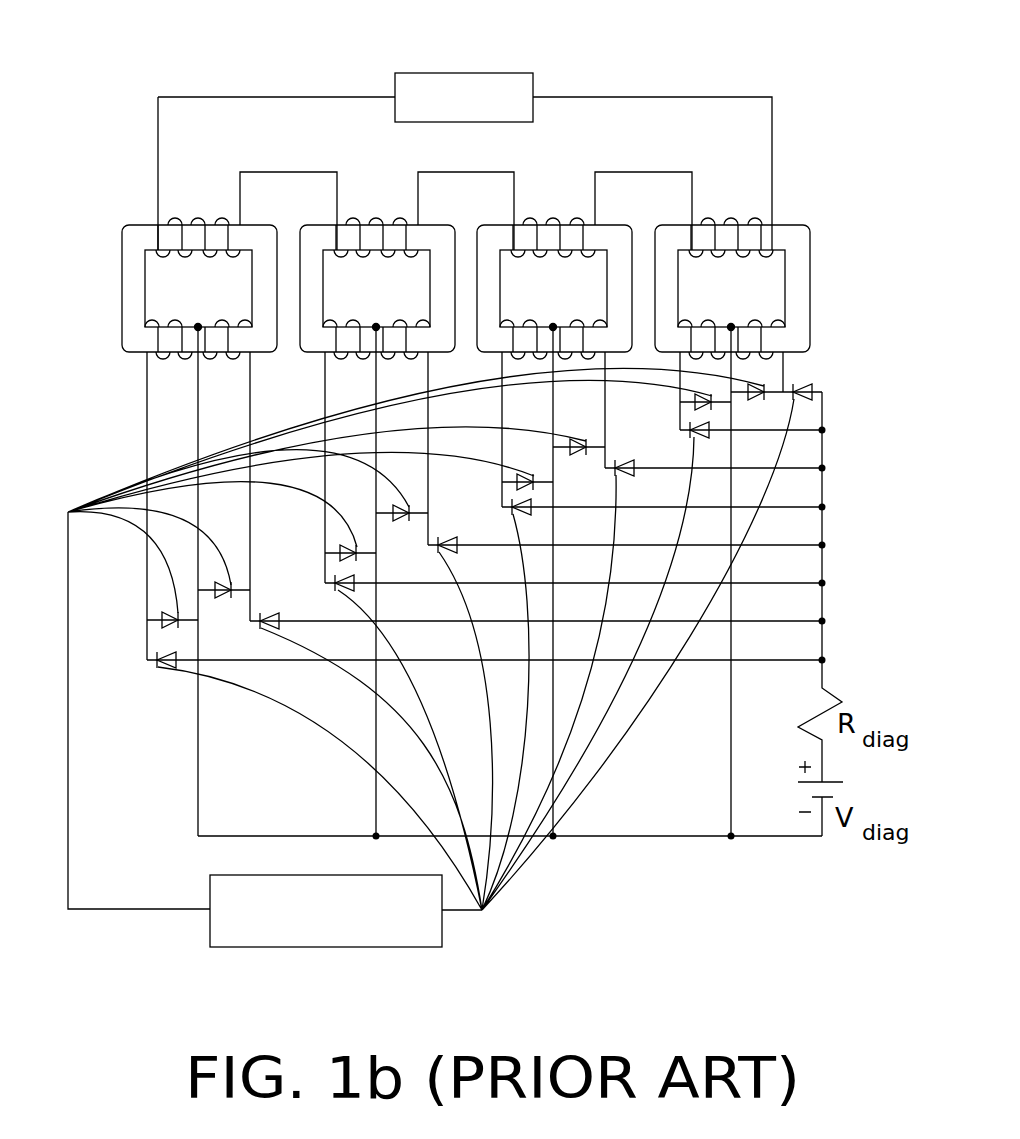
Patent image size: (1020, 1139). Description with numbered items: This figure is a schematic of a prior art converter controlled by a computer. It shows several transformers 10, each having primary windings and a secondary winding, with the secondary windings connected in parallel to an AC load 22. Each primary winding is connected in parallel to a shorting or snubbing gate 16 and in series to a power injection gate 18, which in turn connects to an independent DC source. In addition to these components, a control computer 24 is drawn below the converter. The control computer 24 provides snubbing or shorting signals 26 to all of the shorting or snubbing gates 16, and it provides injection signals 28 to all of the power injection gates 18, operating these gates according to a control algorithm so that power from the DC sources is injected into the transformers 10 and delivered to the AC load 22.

The transformer 10 is at (142, 212).
The shorting or snubbing gate 16 is at (230, 596).
The power injection gate 18 is at (260, 618).
The AC load 22 is at (549, 76).
The control computer 24 is at (273, 948).
The snubbing or shorting signals 26 is at (162, 475).
The injection signals 28 is at (582, 702).